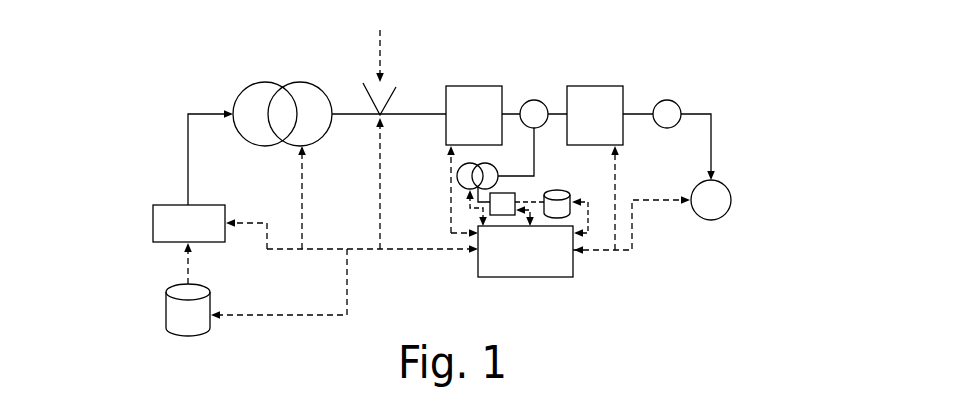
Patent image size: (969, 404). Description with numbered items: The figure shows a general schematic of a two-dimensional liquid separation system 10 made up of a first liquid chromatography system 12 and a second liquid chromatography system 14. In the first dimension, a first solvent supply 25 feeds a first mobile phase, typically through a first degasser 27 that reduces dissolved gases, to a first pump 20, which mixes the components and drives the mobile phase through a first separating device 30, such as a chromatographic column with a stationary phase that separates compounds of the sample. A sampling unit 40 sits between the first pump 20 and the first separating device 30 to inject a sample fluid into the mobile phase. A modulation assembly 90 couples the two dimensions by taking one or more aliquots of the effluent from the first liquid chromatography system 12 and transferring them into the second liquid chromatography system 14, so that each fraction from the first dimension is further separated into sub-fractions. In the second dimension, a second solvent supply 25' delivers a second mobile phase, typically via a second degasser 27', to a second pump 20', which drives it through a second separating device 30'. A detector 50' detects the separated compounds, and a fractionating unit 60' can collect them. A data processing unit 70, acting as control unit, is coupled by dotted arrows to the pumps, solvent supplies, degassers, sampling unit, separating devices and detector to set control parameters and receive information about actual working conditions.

The two-dimensional liquid separation system 10 is at (640, 268).
The first liquid chromatography system 12 is at (126, 97).
The second liquid chromatography system 14 is at (746, 117).
The first pump 20 is at (282, 127).
The second pump 20' is at (441, 187).
The first solvent supply 25 is at (205, 310).
The second solvent supply 25' is at (610, 185).
The first degasser 27 is at (165, 244).
The second degasser 27' is at (539, 185).
The first separating device 30 is at (475, 118).
The second separating device 30' is at (601, 127).
The sampling unit 40 is at (389, 92).
The detector 50' is at (685, 66).
The fractionating unit 60' is at (700, 191).
The data processing unit 70 is at (532, 277).
The modulation assembly 90 is at (534, 100).